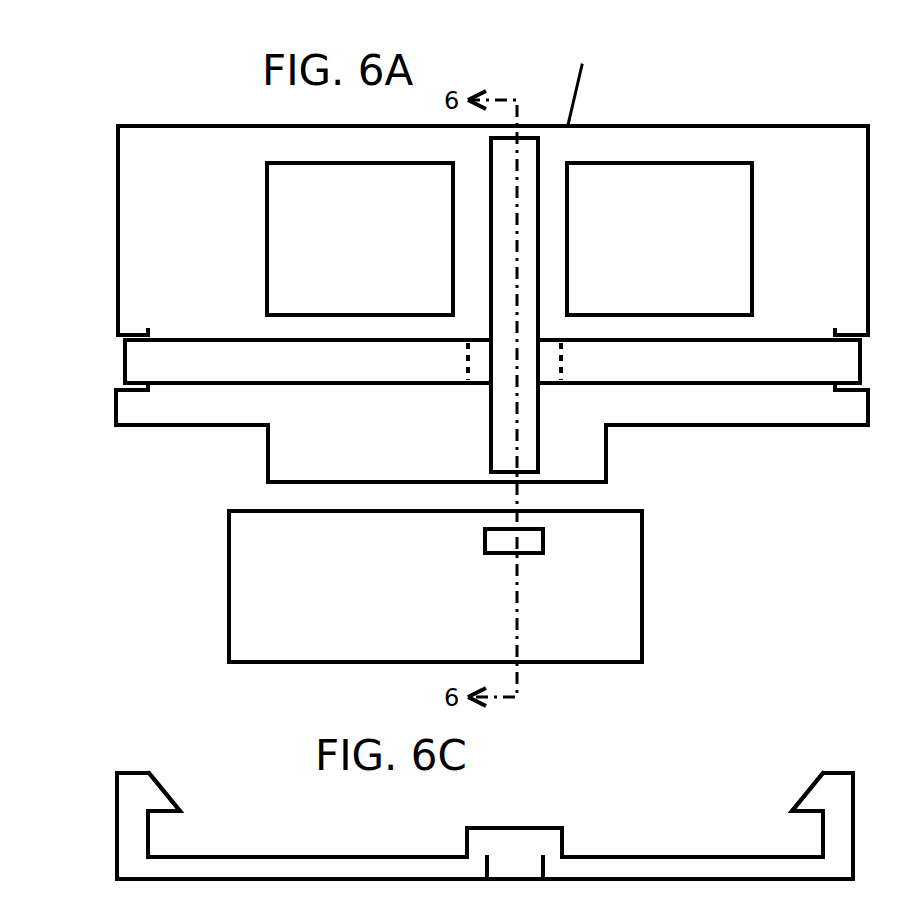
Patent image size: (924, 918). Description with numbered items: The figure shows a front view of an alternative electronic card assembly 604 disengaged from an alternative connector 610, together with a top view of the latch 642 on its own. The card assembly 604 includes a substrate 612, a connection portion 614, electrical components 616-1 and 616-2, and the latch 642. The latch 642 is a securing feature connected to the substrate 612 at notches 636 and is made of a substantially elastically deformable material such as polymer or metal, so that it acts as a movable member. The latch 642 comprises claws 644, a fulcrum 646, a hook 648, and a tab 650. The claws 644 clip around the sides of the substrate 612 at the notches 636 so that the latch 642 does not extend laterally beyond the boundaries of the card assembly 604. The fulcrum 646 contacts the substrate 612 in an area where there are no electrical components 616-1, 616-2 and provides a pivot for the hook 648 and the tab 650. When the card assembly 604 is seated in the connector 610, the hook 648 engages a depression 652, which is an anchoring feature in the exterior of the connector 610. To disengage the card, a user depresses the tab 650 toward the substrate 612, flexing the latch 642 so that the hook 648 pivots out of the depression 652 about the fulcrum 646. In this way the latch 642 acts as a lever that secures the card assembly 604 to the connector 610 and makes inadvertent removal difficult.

In FIG. 6A, the electronic card assembly 604 is at (619, 91).
In FIG. 6A, the substrate 612 is at (748, 124).
In FIG. 6A, the tab 650 is at (542, 170).
In FIG. 6A, the electrical component 616-1 is at (659, 239).
In FIG. 6A, the electrical component 616-2 is at (360, 239).
In FIG. 6A, the notches 636 is at (845, 330).
In FIG. 6A, the latch 642 is at (655, 386).
In FIG. 6C, the latch 642 is at (335, 856).
In FIG. 6A, the connection portion 614 is at (265, 445).
In FIG. 6A, the hook 648 is at (490, 445).
In FIG. 6A, the connector 610 is at (643, 578).
In FIG. 6A, the depression 652 is at (486, 538).
In FIG. 6C, the claws 644 is at (810, 783).
In FIG. 6C, the fulcrum 646 is at (535, 827).